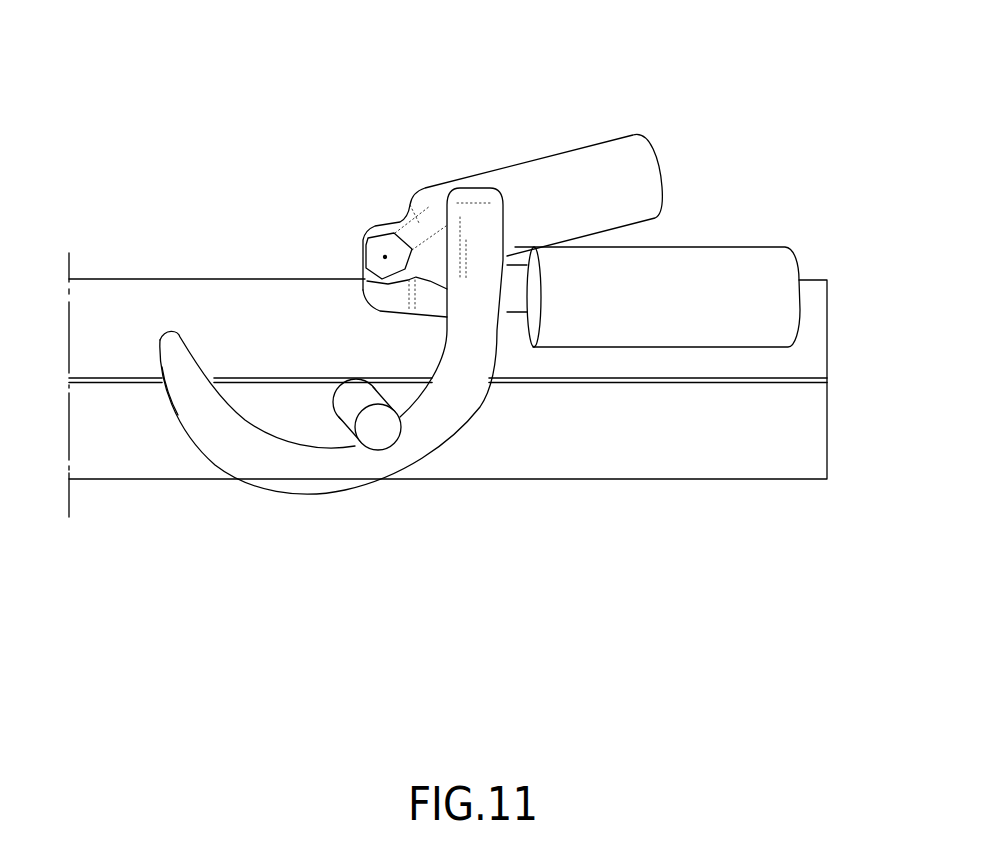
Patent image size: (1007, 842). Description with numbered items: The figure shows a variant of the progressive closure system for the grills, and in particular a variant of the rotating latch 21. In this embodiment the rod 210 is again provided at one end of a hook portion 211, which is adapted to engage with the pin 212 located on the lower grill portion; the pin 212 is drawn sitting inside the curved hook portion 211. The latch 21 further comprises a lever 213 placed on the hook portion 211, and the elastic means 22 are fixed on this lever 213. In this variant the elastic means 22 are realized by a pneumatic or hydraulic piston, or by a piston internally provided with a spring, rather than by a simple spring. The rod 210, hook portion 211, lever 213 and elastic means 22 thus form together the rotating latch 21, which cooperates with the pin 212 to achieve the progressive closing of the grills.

The rotating latch 21 is at (324, 523).
The rod 210 is at (385, 256).
The hook portion 211 is at (212, 413).
The pin 212 is at (381, 431).
The lever 213 is at (380, 340).
The elastic means 22 is at (720, 288).